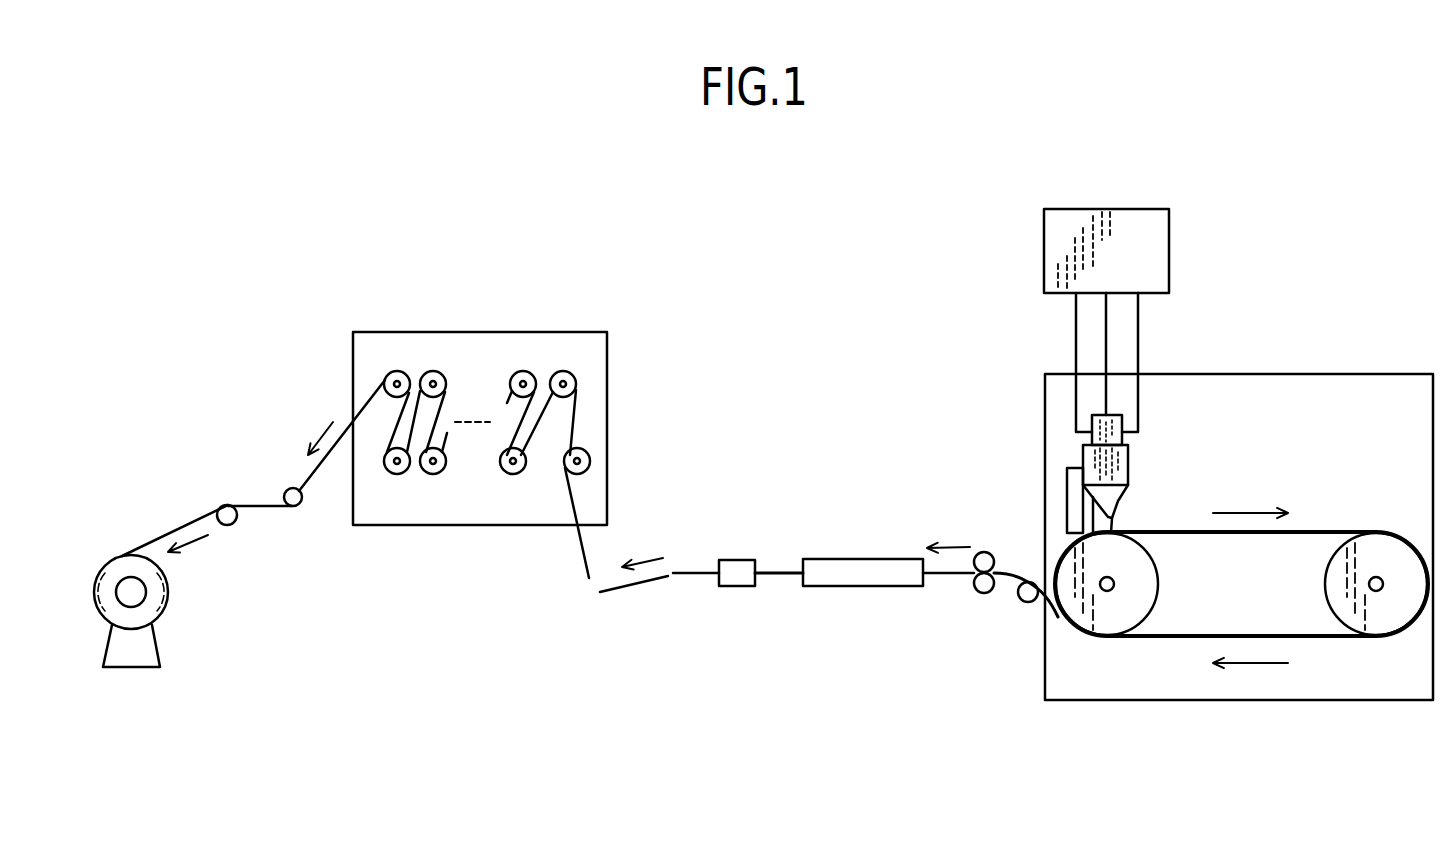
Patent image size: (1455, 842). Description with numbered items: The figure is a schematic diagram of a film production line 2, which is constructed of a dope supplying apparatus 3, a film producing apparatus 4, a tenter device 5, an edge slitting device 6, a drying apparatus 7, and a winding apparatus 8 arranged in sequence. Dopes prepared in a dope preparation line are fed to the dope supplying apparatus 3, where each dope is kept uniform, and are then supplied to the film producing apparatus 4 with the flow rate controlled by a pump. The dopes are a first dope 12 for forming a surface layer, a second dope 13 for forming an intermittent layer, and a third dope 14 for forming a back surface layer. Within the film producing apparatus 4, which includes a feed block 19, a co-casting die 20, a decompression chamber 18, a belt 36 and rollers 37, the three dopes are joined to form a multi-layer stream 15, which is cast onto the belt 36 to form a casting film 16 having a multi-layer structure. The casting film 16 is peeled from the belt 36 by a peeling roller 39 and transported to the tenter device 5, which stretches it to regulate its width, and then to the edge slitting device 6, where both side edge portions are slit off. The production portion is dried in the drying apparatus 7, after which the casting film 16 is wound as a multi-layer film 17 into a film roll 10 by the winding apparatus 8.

The film production line 2 is at (523, 770).
The dope supplying apparatus 3 is at (1079, 209).
The film producing apparatus 4 is at (1132, 702).
The tenter device 5 is at (818, 587).
The edge slitting device 6 is at (729, 587).
The drying apparatus 7 is at (445, 332).
The winding apparatus 8 is at (137, 667).
The film roll 10 is at (157, 595).
The first dope 12 is at (1138, 362).
The second dope 13 is at (1106, 343).
The third dope 14 is at (1076, 363).
The multi-layer stream 15 is at (1113, 518).
The casting film 16 is at (780, 572).
The multi-layer film 17 is at (187, 522).
The decompression chamber 18 is at (1067, 517).
The feed block 19 is at (1092, 438).
The co-casting die 20 is at (1083, 455).
The belt 36 is at (1297, 533).
The rollers 37 is at (1147, 614).
The peeling roller 39 is at (1022, 600).